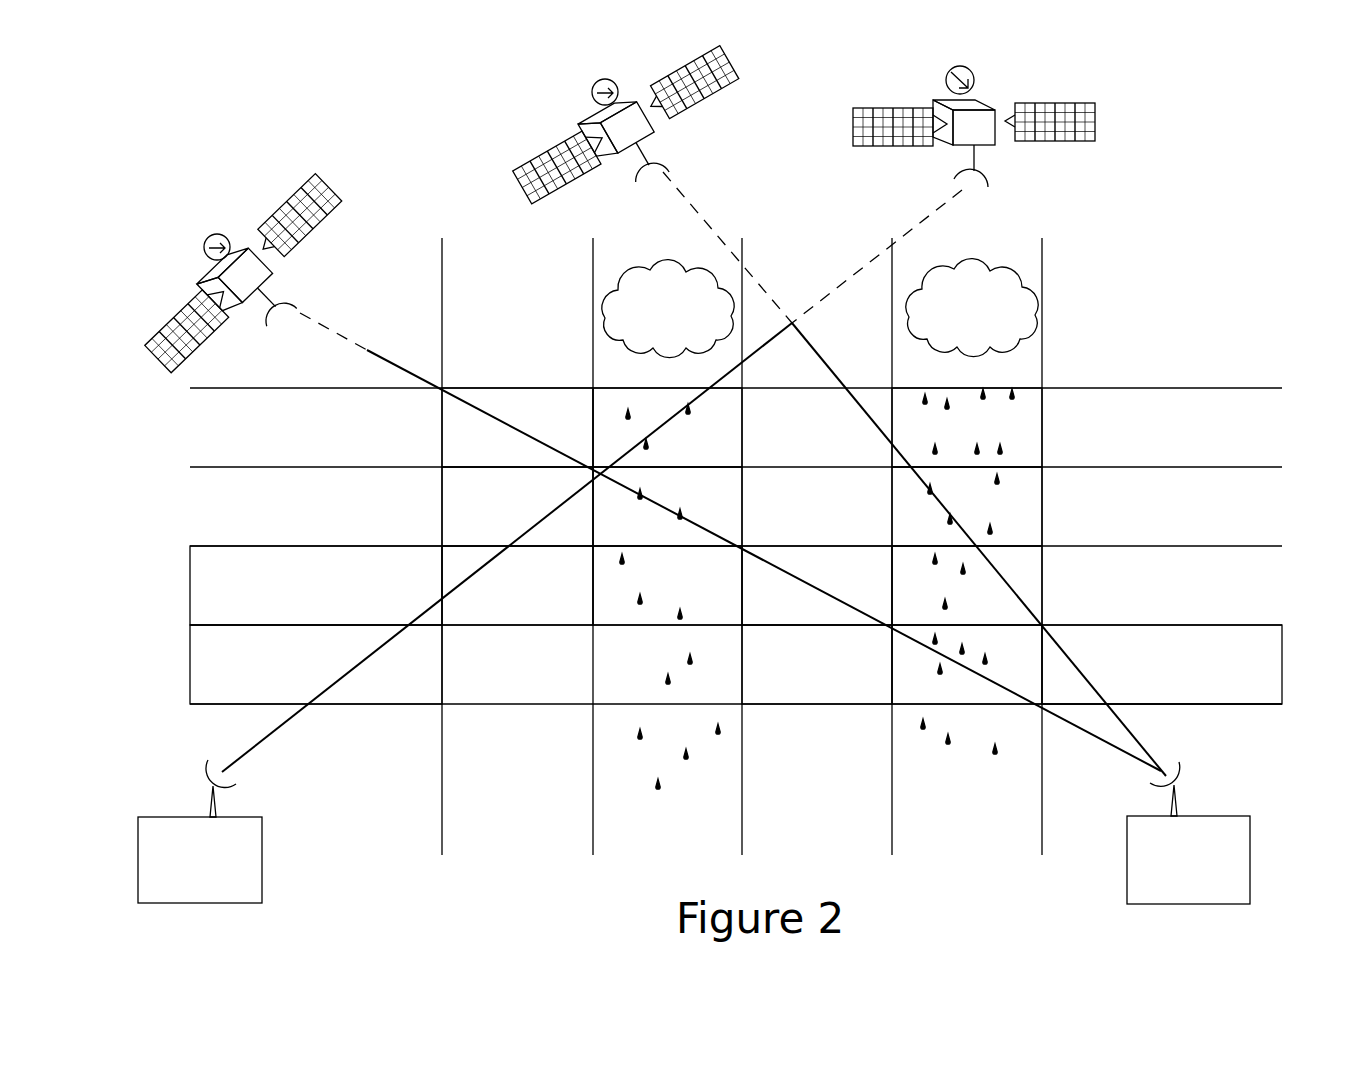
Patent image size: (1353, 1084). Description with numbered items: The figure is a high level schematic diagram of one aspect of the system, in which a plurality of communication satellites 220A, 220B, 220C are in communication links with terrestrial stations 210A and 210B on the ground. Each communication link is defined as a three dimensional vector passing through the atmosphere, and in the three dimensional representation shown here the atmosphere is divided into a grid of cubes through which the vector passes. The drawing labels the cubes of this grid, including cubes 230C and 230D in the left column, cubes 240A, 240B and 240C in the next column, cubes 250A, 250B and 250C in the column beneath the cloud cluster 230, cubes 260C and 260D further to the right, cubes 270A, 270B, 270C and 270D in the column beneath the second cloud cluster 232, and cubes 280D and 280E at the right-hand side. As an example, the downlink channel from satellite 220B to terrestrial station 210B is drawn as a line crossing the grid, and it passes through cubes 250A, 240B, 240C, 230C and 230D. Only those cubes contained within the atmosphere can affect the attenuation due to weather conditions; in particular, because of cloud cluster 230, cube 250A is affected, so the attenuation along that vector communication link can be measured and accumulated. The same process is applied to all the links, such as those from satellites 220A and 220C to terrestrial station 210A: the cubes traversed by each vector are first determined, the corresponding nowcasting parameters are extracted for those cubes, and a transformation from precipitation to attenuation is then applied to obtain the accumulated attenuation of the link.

The terrestrial station 210A is at (1210, 816).
The terrestrial station 210B is at (178, 817).
The communication satellite 220A is at (215, 235).
The communication satellite 220B is at (975, 80).
The communication satellite 220C is at (592, 92).
The cloud cluster 230 is at (661, 268).
The cloud / weather system 232 is at (972, 267).
The cube 230C is at (426, 584).
The cube 230D is at (439, 681).
The grid cell 240A is at (586, 422).
The cube 240B is at (564, 504).
The cube 240C is at (584, 584).
The cube 250A is at (734, 466).
The grid cell 250B is at (734, 504).
The grid cell 250C is at (734, 584).
The grid cell 260C is at (882, 584).
The grid cell 260D is at (882, 660).
The grid cell 270A is at (1039, 442).
The grid cell 270B is at (1039, 520).
The grid cell 270C is at (1019, 620).
The grid cell 270D is at (1039, 660).
The grid cell 280D is at (1212, 659).
The grid cell 280E is at (1212, 739).